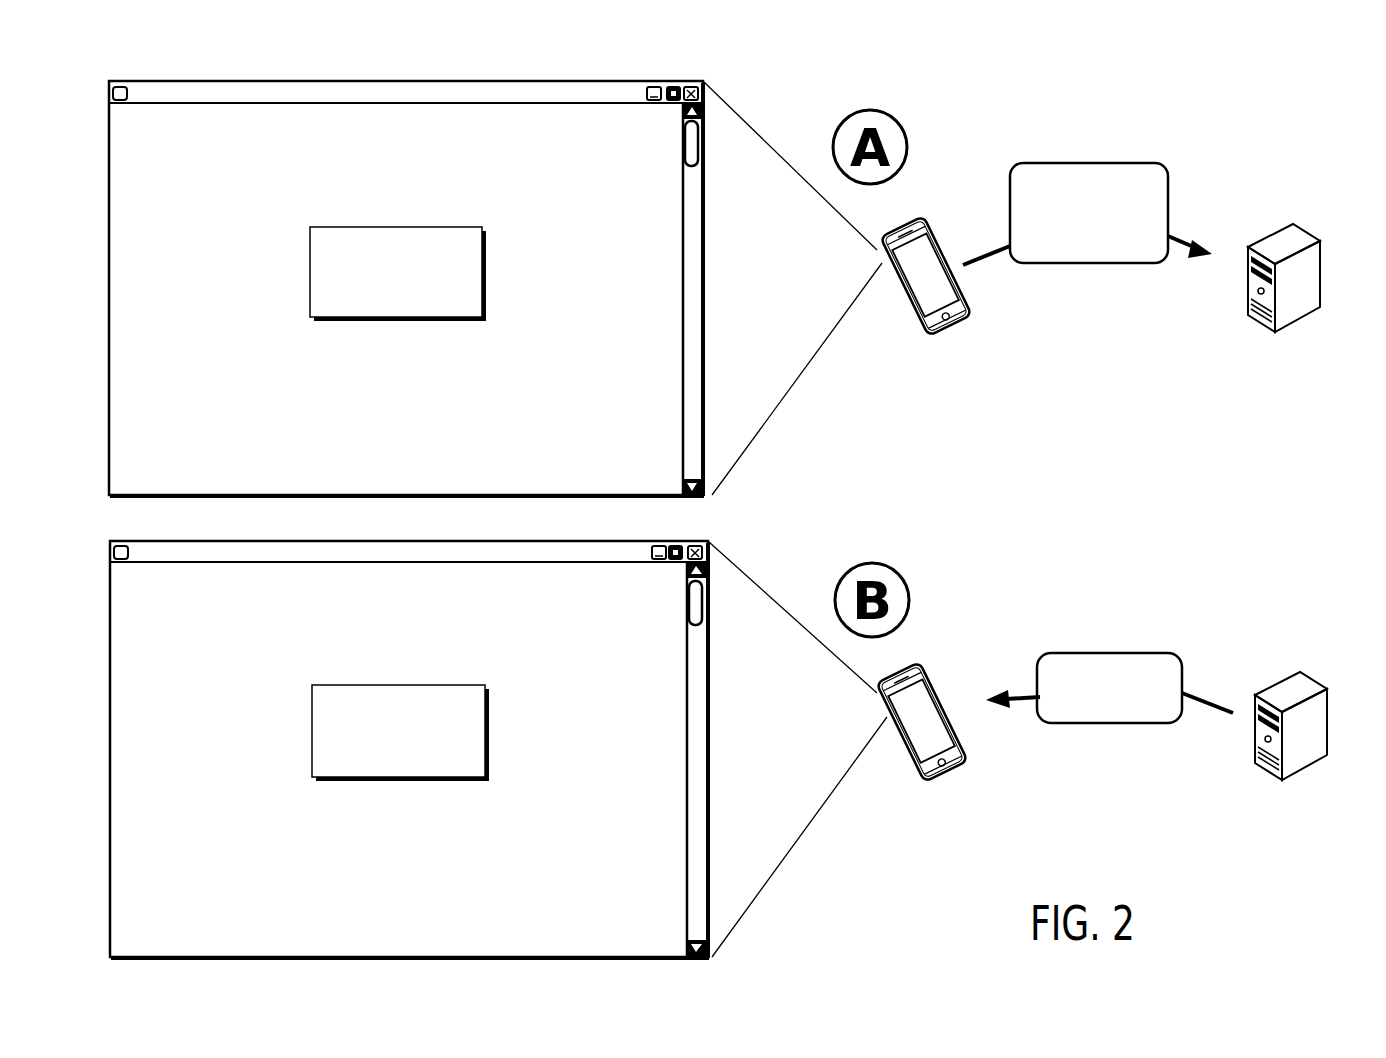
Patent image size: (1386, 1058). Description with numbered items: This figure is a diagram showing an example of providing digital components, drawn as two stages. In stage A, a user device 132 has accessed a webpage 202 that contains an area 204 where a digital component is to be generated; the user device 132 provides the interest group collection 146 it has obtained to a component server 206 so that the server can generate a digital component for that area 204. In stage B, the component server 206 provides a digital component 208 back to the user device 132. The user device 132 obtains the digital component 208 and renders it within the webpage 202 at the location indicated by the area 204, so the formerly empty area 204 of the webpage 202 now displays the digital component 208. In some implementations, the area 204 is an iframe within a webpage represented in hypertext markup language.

The webpage 202 is at (196, 78).
The area 204 is at (365, 232).
The digital component 208 is at (345, 688).
The interest group collection 146 is at (1042, 164).
The user device 132 is at (921, 220).
The component server 206 is at (1284, 225).